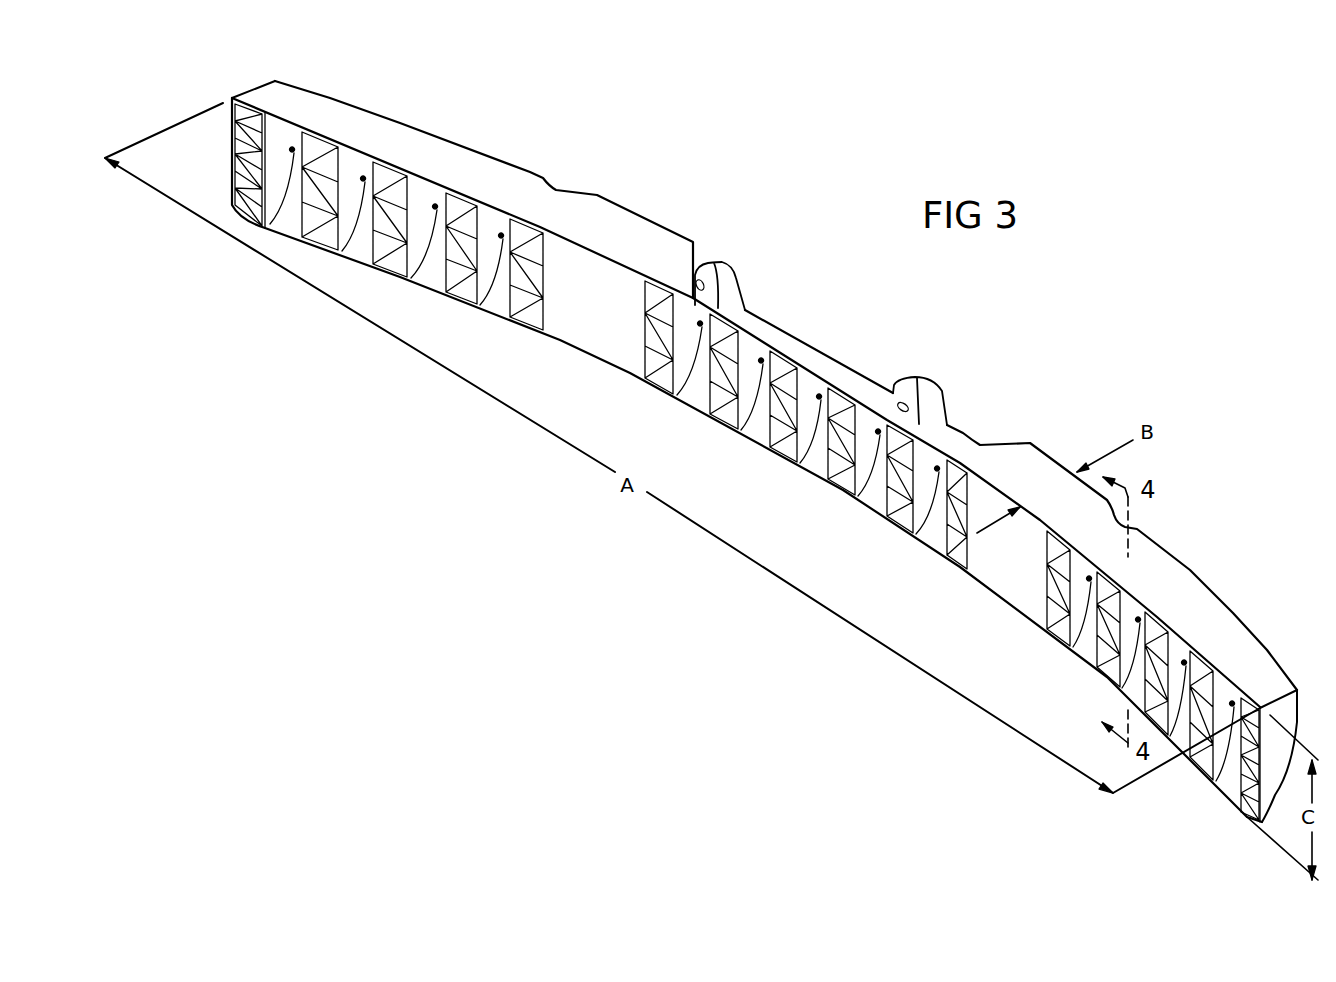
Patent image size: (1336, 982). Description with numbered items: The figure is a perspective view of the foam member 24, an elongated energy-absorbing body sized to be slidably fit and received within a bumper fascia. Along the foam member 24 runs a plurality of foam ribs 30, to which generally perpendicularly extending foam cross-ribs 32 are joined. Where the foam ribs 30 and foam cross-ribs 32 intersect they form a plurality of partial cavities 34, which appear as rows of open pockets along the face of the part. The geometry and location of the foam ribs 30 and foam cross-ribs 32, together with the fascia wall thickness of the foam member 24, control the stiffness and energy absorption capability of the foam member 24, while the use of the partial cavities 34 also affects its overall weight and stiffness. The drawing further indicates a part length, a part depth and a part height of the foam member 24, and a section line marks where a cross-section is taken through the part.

The foam member 24 is at (672, 247).
The foam ribs 30 is at (352, 163).
The foam cross-ribs 32 is at (413, 217).
The partial cavities 34 is at (521, 295).